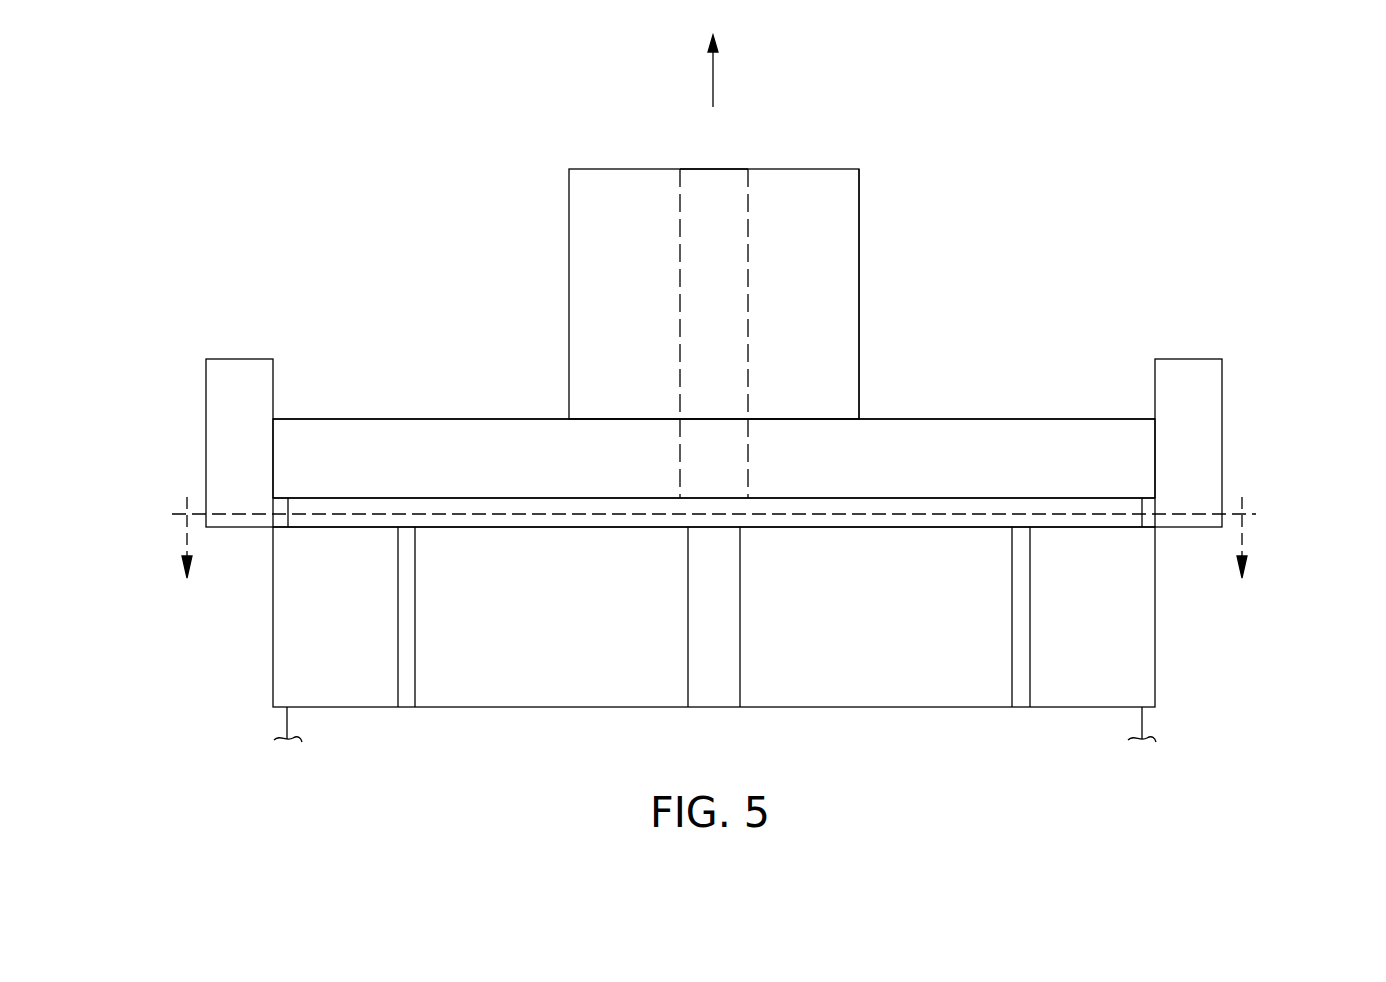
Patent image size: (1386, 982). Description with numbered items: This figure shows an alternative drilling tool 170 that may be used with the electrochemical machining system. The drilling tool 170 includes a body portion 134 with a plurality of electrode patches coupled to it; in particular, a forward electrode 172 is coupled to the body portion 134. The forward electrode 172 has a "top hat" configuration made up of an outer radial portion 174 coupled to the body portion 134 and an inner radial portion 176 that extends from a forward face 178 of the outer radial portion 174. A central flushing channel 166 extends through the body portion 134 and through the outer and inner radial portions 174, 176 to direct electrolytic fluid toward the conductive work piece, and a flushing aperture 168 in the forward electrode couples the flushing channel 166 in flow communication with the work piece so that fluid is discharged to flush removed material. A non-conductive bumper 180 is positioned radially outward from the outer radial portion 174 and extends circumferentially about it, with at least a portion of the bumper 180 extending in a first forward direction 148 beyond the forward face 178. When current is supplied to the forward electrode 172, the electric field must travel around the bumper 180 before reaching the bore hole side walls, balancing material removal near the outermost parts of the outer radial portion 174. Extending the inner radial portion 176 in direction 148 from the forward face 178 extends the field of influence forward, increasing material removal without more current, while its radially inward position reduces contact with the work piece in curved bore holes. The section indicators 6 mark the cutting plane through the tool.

The first forward direction 148 is at (713, 72).
The alternative drilling tool 170 is at (900, 123).
The inner radial portion 176 is at (859, 196).
The flushing aperture 168 is at (725, 169).
The central flushing channel 166 is at (748, 313).
The forward electrode 172 is at (982, 358).
The forward face 178 is at (1045, 419).
The non-conductive bumper 180 is at (1222, 380).
The outer radial portion 174 is at (1137, 483).
The body portion 134 is at (1142, 718).
The section line 6- 6 is at (715, 539).